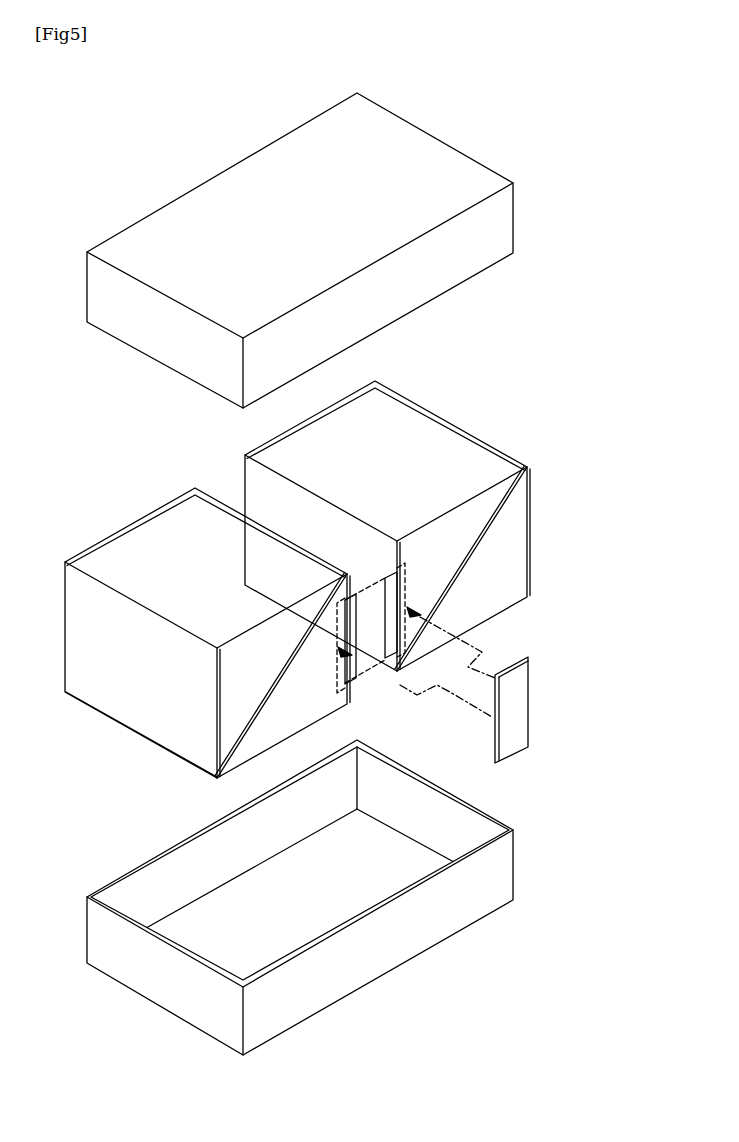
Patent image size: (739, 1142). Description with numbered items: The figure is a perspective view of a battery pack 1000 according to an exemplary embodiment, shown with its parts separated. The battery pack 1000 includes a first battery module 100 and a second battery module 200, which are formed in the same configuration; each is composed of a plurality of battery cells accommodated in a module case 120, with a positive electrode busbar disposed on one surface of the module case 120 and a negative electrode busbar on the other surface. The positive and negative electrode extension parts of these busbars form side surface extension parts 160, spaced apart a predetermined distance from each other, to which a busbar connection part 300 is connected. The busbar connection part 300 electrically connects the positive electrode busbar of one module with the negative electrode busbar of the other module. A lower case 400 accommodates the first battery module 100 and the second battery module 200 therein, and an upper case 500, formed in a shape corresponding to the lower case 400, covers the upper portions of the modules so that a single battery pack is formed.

The battery pack 1000 is at (138, 128).
The upper case 500 is at (443, 160).
The first battery module 100 is at (150, 528).
The module case 120 is at (167, 732).
The second battery module 200 is at (440, 433).
The side surface extension parts 160 is at (405, 598).
The busbar connection part 300 is at (520, 707).
The lower case 400 is at (410, 943).